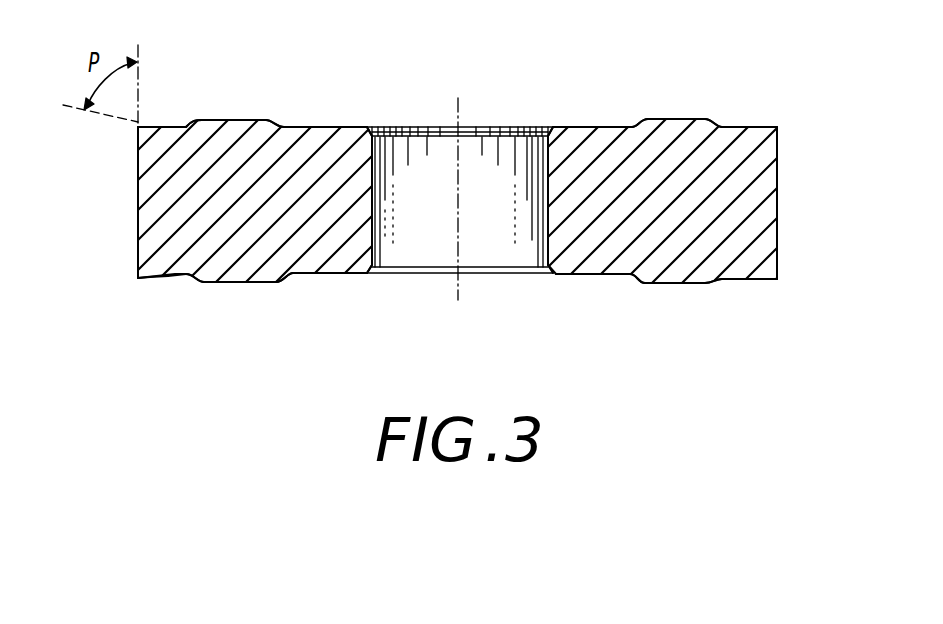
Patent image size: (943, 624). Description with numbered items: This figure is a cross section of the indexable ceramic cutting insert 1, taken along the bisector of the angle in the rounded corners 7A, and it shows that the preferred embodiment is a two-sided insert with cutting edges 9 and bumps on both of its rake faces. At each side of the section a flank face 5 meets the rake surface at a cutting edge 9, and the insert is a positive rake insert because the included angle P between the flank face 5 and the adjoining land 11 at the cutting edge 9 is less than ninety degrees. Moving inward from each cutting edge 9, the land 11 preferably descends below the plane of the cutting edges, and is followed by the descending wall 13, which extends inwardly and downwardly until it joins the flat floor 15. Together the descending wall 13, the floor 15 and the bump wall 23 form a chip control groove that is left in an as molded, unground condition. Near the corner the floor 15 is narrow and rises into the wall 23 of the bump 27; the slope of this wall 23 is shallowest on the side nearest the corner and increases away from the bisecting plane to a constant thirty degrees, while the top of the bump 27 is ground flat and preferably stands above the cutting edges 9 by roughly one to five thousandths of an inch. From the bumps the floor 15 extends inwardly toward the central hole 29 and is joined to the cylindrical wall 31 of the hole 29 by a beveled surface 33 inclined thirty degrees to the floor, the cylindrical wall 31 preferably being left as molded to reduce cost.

The cutting insert 1 is at (350, 193).
The flank face 5 is at (137, 216).
The rounded corner area 7A is at (137, 163).
The cutting edge 9 is at (137, 124).
The land 11 is at (149, 126).
The descending wall 13 is at (175, 126).
The floor 15 is at (328, 127).
The bump wall 23 is at (188, 126).
The bump 27 is at (242, 120).
The hole 29 is at (415, 126).
The cylindrical wall 31 is at (510, 219).
The beveled surface 33 is at (547, 127).